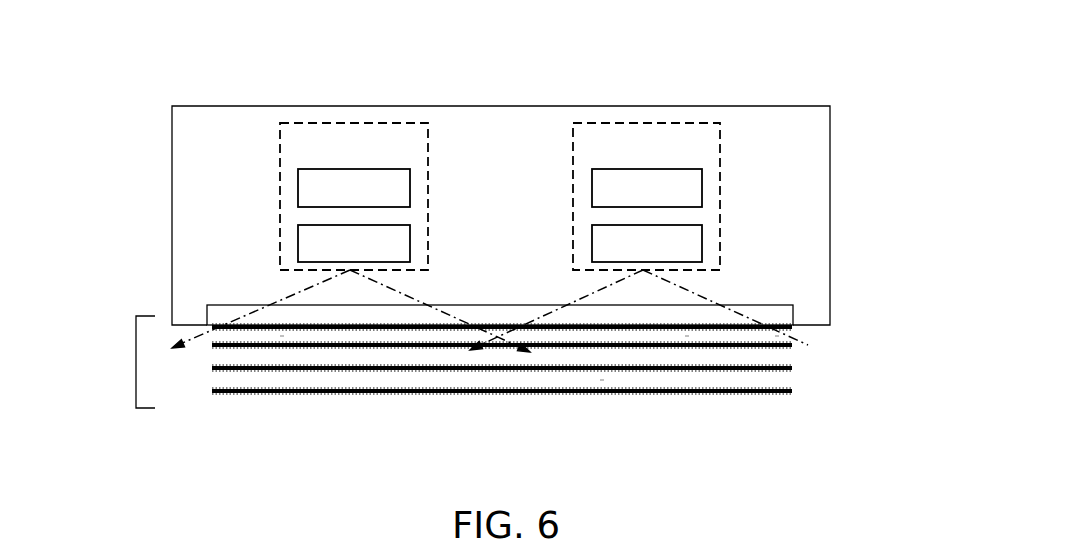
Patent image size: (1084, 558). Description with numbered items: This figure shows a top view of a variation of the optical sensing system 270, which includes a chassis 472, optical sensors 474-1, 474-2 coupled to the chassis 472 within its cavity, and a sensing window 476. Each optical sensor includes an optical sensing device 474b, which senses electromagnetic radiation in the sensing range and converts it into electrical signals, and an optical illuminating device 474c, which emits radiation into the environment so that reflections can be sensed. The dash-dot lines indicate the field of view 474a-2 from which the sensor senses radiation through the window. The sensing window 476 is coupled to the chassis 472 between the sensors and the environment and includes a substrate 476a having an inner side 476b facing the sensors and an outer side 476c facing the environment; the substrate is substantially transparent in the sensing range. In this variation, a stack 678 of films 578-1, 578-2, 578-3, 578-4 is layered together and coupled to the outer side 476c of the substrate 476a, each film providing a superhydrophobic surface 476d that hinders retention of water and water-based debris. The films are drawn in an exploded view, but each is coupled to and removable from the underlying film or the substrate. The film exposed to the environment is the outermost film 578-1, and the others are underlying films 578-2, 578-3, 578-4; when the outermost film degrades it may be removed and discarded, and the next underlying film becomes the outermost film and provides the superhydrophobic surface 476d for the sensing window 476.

The optical sensing system 270 is at (834, 68).
The chassis 472 is at (830, 160).
The optical sensor 474-1 is at (380, 169).
The optical sensor 474-2 is at (674, 169).
The optical sensing device 474b is at (330, 203).
The optical illuminating device 474c is at (331, 259).
The field of view 474a-2 is at (822, 349).
The sensing window 476 is at (802, 286).
The substrate 476a is at (795, 325).
The inner side 476b is at (777, 329).
The outer side 476c is at (687, 332).
The superhydrophobic surface 476d is at (282, 332).
The outermost film 578-1 is at (230, 328).
The underlying film 578-2 is at (338, 346).
The underlying film 578-3 is at (473, 369).
The film 578-4 is at (558, 393).
The stack 678 is at (136, 363).